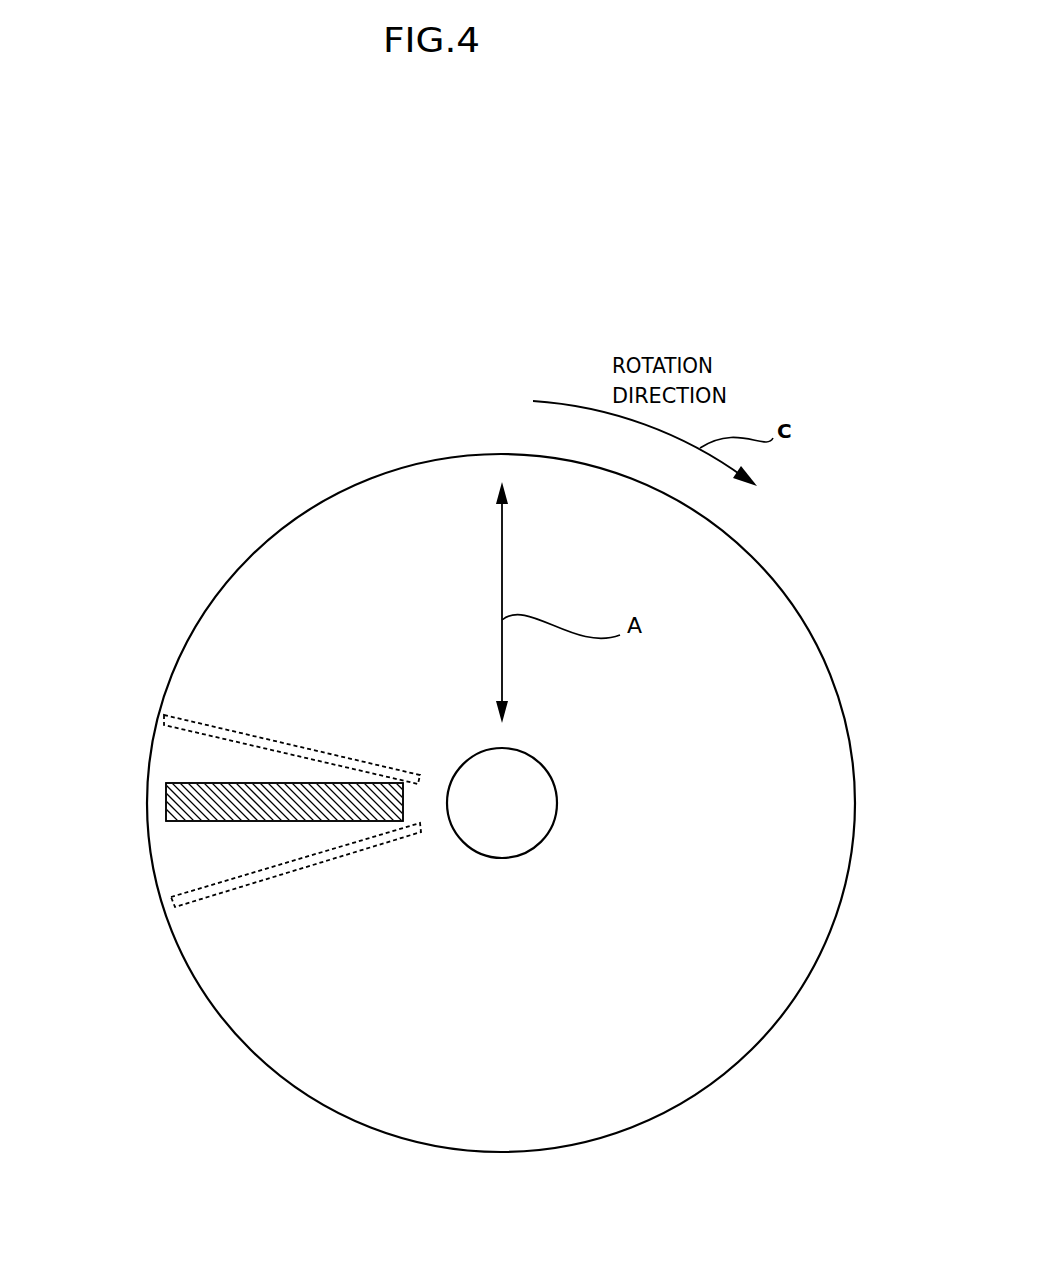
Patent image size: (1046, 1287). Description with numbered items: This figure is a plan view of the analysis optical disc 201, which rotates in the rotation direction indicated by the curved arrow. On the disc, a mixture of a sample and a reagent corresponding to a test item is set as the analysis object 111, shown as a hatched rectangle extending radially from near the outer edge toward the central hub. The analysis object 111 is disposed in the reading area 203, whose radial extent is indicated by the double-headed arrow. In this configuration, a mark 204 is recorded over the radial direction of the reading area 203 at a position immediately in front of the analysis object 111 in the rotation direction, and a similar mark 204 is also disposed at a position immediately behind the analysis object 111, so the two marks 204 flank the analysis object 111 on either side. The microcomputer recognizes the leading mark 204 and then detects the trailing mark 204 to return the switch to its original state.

The analysis optical disc 201 is at (283, 1092).
The analysis object 111 is at (166, 800).
The reading area 203 is at (277, 819).
The mark 204 is at (240, 727).